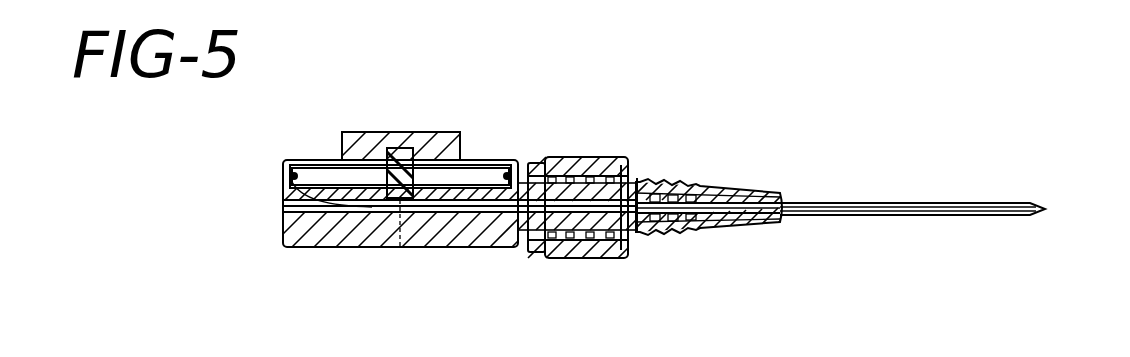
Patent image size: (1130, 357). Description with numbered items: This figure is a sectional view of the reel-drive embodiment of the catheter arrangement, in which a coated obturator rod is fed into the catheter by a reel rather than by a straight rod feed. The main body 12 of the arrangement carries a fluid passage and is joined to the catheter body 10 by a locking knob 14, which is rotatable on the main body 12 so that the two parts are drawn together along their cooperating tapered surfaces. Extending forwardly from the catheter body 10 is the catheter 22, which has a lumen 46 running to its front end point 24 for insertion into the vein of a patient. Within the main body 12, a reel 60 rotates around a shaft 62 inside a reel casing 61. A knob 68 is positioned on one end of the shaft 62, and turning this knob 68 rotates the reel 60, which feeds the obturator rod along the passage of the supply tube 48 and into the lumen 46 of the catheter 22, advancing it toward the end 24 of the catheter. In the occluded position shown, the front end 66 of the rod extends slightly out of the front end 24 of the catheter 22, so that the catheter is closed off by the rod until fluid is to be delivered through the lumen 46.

The catheter body 10 is at (718, 228).
The main body 12 is at (498, 243).
The locking knob 14 is at (614, 162).
The catheter 22 is at (948, 203).
The front end point 24 is at (1045, 208).
The lumen 46 is at (960, 215).
The supply tube 48 is at (640, 182).
The reel 60 is at (330, 172).
The reel casing 61 is at (515, 170).
The shaft 62 is at (402, 148).
The front end 66 is at (637, 232).
The knob 68 is at (462, 153).